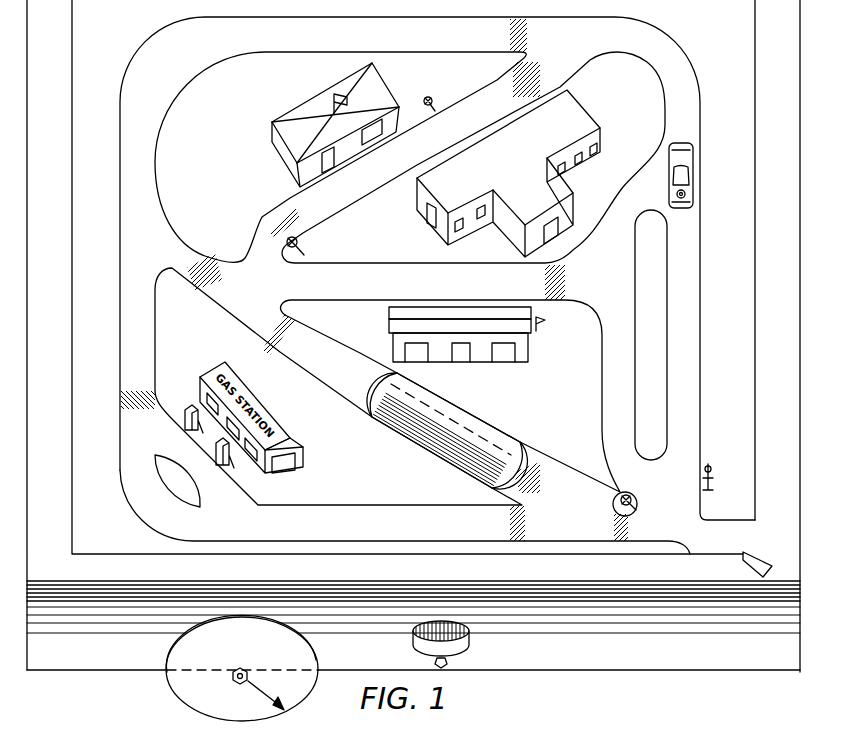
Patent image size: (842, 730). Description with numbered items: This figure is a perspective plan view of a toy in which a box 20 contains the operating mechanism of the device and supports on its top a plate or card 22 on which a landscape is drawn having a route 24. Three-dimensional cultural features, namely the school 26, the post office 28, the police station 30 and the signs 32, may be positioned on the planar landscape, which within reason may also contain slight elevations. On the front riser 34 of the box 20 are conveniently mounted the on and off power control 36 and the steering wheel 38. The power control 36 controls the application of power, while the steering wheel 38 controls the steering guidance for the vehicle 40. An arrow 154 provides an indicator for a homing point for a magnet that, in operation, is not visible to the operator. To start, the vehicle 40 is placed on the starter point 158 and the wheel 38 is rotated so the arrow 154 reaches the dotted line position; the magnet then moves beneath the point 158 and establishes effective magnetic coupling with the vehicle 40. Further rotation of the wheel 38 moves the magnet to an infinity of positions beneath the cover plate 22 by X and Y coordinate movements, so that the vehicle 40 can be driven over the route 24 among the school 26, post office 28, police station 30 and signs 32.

The box 20 is at (722, 636).
The plate or card 22 is at (790, 570).
The route 24 is at (700, 343).
The school 26 is at (596, 117).
The post office 28 is at (534, 334).
The police station 30 is at (312, 104).
The signs 32 is at (436, 101).
The front riser 34 is at (540, 660).
The on and off power control 36 is at (462, 655).
The steering wheel 38 is at (296, 693).
The vehicle 40 is at (694, 165).
The arrow 154 is at (260, 692).
The starter point 158 is at (760, 556).